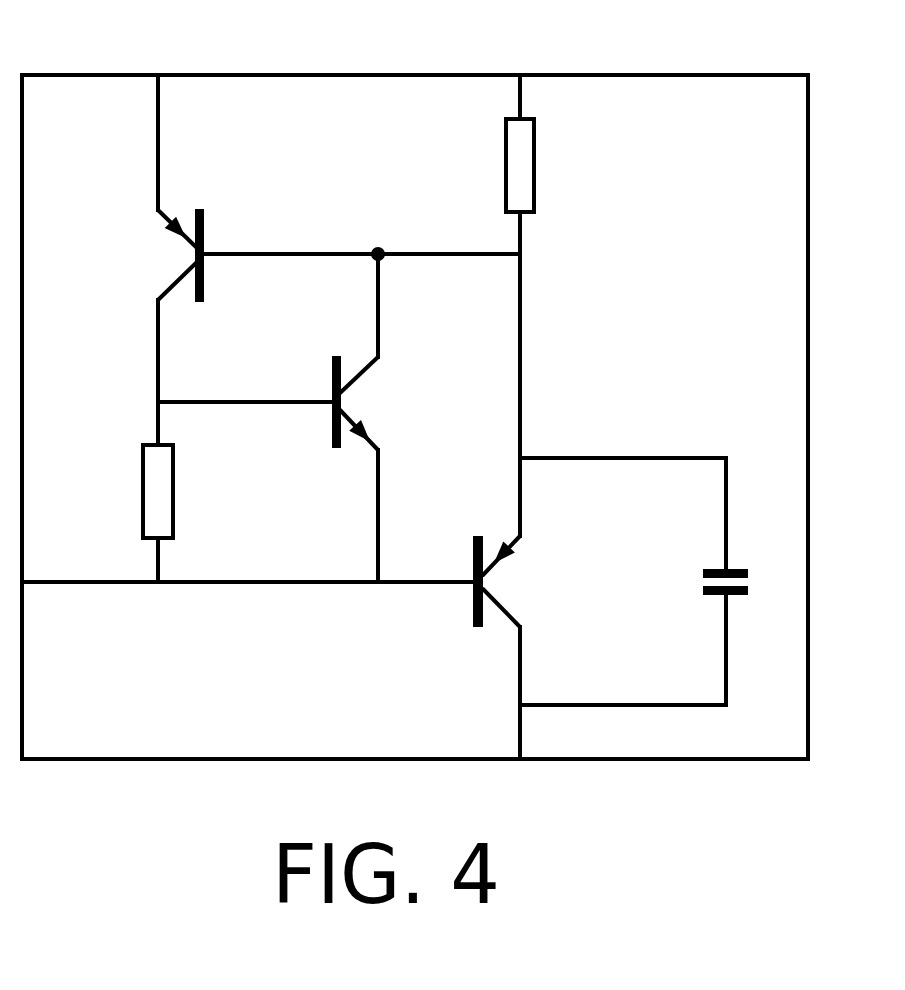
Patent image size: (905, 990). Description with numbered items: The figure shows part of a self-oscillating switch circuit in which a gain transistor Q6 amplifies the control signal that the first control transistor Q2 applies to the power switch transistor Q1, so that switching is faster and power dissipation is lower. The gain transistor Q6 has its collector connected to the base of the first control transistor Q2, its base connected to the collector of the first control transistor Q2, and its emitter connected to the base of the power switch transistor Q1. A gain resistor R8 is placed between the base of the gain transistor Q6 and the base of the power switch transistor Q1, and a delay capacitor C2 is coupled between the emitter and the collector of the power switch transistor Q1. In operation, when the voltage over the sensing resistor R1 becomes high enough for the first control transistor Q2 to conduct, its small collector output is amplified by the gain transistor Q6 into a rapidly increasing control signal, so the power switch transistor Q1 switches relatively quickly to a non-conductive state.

The sensing resistor R1 is at (549, 165).
The first control transistor Q2 is at (159, 255).
The gain transistor Q6 is at (377, 403).
The gain resistor R8 is at (187, 491).
The power switch transistor Q1 is at (518, 581).
The delay capacitor C2 is at (697, 584).